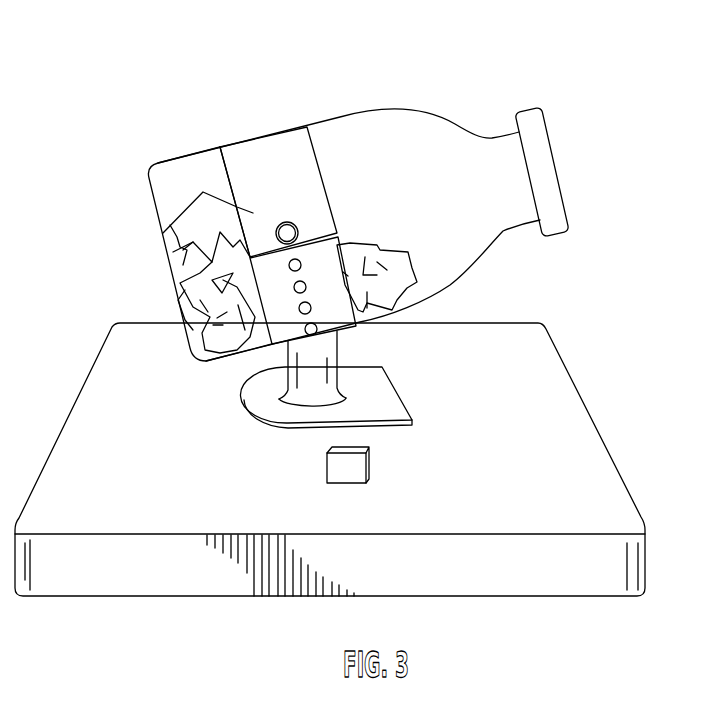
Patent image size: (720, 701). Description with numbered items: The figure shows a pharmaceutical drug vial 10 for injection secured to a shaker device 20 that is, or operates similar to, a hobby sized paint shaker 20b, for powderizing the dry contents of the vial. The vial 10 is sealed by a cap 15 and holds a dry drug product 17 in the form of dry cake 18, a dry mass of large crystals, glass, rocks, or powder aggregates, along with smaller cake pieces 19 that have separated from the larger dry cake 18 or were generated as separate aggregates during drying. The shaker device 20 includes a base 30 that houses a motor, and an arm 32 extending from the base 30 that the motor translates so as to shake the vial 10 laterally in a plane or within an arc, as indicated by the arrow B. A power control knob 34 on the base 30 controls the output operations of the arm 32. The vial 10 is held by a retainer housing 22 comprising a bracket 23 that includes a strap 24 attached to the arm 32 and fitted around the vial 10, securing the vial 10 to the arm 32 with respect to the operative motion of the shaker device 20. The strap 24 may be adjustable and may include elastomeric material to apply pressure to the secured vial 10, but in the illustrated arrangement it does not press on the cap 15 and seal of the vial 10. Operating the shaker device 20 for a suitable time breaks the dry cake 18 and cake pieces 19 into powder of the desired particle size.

The vial 10 is at (417, 103).
The cap 15 is at (547, 130).
The dry drug product 17 is at (397, 301).
The dry cake 18 is at (193, 217).
The cake pieces 19 is at (257, 313).
The shaker device 20 is at (330, 438).
The paint shaker 20b is at (539, 354).
The retainer housing 22 is at (214, 146).
The bracket 23 is at (237, 172).
The strap 24 is at (298, 138).
The base 30 is at (613, 577).
The arm 32 is at (263, 411).
The power control knob 34 is at (367, 467).